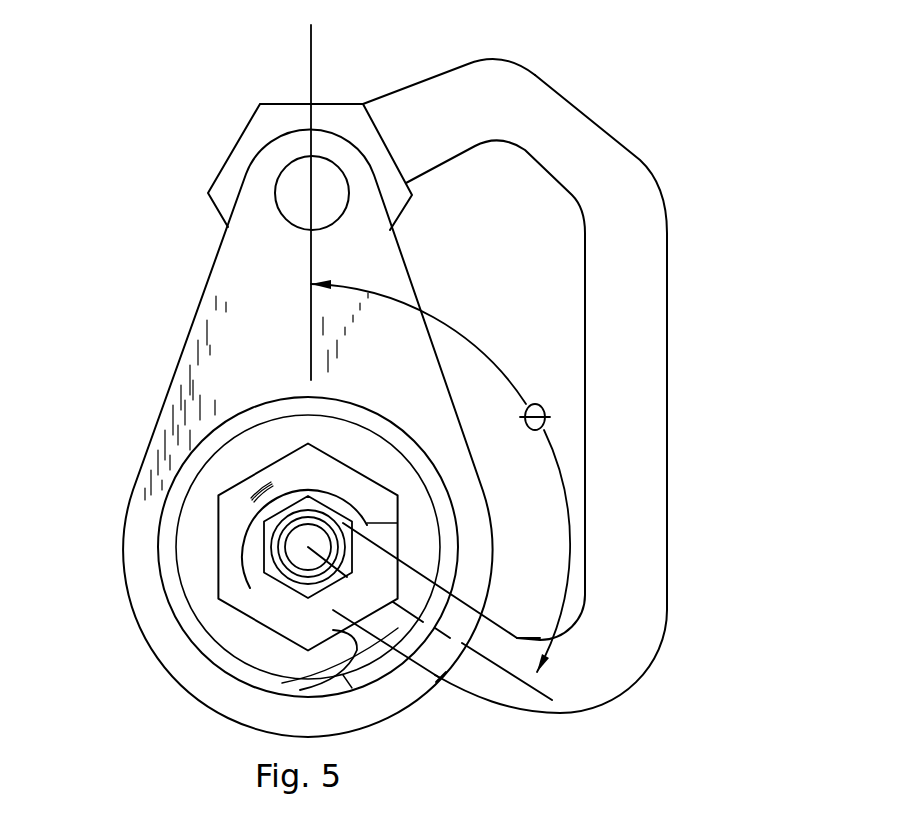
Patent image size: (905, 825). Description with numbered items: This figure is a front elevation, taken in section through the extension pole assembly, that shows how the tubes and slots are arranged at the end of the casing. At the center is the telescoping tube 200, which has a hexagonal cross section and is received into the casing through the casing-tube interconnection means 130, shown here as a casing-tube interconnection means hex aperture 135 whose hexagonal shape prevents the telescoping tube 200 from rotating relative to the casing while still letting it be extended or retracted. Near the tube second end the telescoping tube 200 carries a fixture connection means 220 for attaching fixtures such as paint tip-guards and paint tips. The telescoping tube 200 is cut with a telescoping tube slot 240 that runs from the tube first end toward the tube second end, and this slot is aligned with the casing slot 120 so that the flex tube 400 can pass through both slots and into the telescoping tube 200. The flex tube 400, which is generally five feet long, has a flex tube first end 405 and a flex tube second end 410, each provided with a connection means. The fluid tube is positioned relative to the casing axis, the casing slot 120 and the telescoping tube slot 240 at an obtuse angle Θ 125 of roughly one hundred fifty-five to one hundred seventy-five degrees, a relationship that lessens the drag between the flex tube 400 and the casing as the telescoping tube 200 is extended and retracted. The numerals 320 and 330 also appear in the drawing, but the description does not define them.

The casing slot 120 is at (440, 573).
The angle Θ 125 is at (545, 403).
The casing-tube interconnection means 130 is at (255, 477).
The casing-tube interconnection means hex aperture 135 is at (228, 493).
The telescoping tube 200 is at (235, 532).
The fixture connection means 220 is at (220, 597).
The telescoping tube slot 240 is at (372, 535).
The mounting lug 320 is at (332, 103).
The frame body 330 is at (235, 322).
The flex tube 400 is at (642, 418).
The flex tube first end 405 is at (408, 113).
The flex tube second end 410 is at (404, 626).